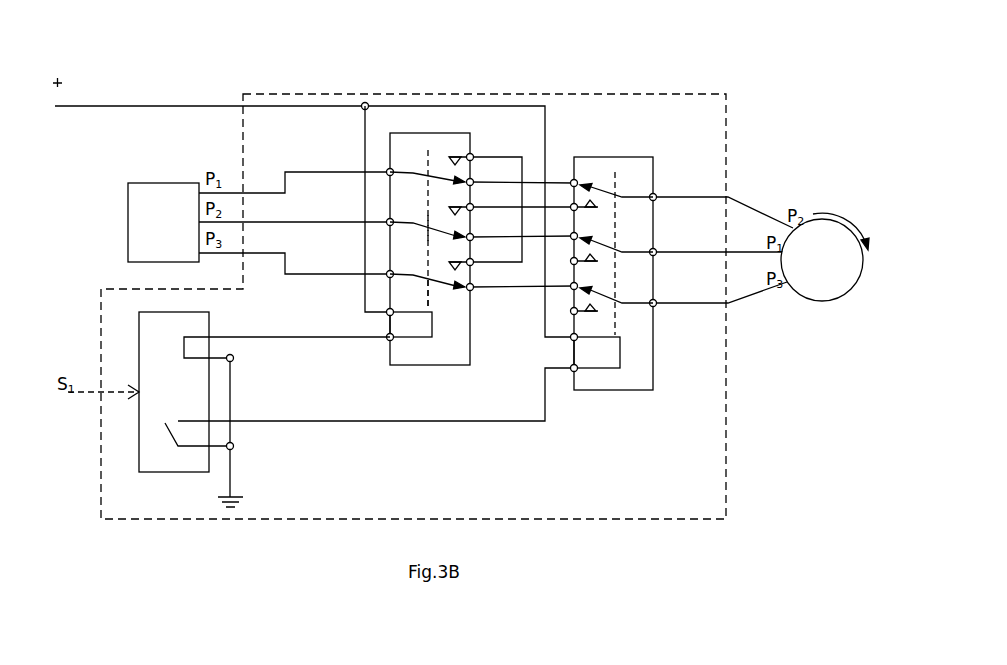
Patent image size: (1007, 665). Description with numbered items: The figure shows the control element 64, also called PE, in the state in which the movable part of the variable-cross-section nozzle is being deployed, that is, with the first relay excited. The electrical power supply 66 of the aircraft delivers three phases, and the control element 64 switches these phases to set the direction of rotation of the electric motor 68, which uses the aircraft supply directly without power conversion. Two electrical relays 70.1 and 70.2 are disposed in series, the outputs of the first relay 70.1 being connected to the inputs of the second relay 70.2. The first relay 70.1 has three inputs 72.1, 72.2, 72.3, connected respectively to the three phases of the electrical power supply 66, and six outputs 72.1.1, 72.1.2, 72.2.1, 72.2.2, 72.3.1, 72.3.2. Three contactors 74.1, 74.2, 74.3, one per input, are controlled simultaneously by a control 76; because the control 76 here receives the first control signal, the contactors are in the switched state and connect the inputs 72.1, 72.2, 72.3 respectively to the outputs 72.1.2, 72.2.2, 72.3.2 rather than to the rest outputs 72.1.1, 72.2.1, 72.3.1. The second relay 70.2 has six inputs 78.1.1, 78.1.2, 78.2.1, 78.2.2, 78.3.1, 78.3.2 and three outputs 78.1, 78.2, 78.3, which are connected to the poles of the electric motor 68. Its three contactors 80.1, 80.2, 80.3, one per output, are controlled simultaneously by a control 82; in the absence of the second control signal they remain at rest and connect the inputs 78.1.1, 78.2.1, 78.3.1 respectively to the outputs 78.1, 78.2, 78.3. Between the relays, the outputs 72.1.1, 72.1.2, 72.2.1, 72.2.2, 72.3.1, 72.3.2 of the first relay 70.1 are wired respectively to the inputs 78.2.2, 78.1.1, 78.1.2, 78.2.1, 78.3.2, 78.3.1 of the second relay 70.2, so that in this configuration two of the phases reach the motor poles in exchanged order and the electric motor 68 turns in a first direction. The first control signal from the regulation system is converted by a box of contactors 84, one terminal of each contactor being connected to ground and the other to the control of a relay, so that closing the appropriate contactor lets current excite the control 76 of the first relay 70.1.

The control element 64 is at (728, 496).
The electrical power supply 66 is at (146, 172).
The electric motor 68 is at (832, 206).
The first relay 70.1 is at (420, 120).
The second relay 70.2 is at (641, 145).
The input of first relay 72.1 is at (390, 172).
The input of first relay 72.2 is at (390, 222).
The input of first relay 72.3 is at (390, 274).
The output of first relay 72.1.1 is at (467, 155).
The output of first relay 72.1.2 is at (471, 178).
The output of first relay 72.2.1 is at (472, 205).
The output of first relay 72.2.2 is at (473, 235).
The output of first relay 72.3.1 is at (470, 264).
The output of first relay 72.3.2 is at (470, 289).
The contactor 74.1 is at (427, 170).
The contactor 74.2 is at (422, 228).
The contactor 74.3 is at (393, 312).
The control 76 is at (426, 352).
The output of second relay 78.1 is at (656, 197).
The output of second relay 78.2 is at (656, 252).
The output of second relay 78.3 is at (656, 304).
The input of second relay 78.1.1 is at (577, 181).
The input of second relay 78.1.2 is at (572, 205).
The input of second relay 78.2.1 is at (578, 236).
The input of second relay 78.2.2 is at (578, 262).
The input of second relay 78.3.1 is at (574, 287).
The input of second relay 78.3.2 is at (574, 311).
The contactor 80.1 is at (623, 196).
The contactor 80.2 is at (622, 250).
The contactor 80.3 is at (622, 305).
The control 82 is at (617, 381).
The box of contactors 84 is at (173, 486).